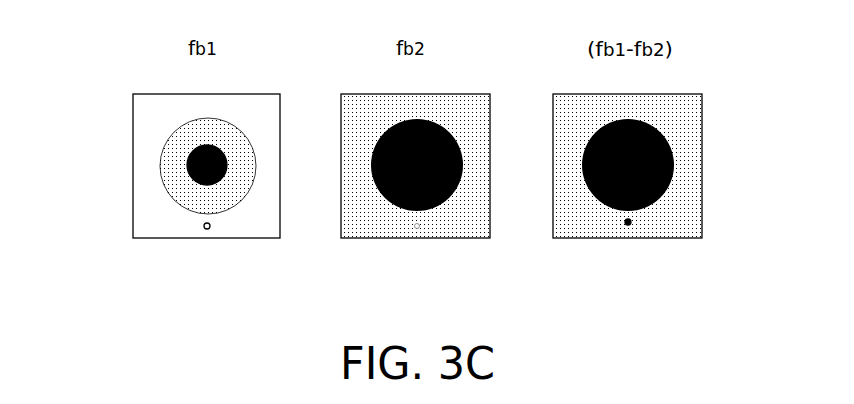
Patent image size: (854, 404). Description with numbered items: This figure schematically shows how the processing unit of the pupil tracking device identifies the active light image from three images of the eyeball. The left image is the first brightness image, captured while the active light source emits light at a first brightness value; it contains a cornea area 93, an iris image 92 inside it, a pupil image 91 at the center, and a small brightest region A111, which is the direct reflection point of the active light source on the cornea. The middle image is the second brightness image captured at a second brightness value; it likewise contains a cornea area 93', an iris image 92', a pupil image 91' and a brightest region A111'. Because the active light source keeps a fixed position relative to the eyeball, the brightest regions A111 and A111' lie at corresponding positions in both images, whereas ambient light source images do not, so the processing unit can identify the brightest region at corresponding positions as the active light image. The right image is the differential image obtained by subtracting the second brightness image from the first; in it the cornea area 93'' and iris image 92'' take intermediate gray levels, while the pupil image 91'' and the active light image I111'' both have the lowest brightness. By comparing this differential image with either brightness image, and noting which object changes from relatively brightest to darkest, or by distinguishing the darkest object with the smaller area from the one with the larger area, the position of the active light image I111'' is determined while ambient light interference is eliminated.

The cornea area 93 is at (194, 136).
The iris image 92 is at (171, 156).
The pupil image 91 is at (157, 192).
The brightest region A111 is at (247, 263).
The cornea area 93' is at (408, 136).
The iris image 92' is at (380, 154).
The pupil image 91' is at (367, 192).
The brightest region A111' is at (435, 264).
The cornea area 93'' is at (619, 136).
The iris image 92'' is at (589, 154).
The pupil image 91'' is at (576, 192).
The active light image I111'' is at (639, 261).